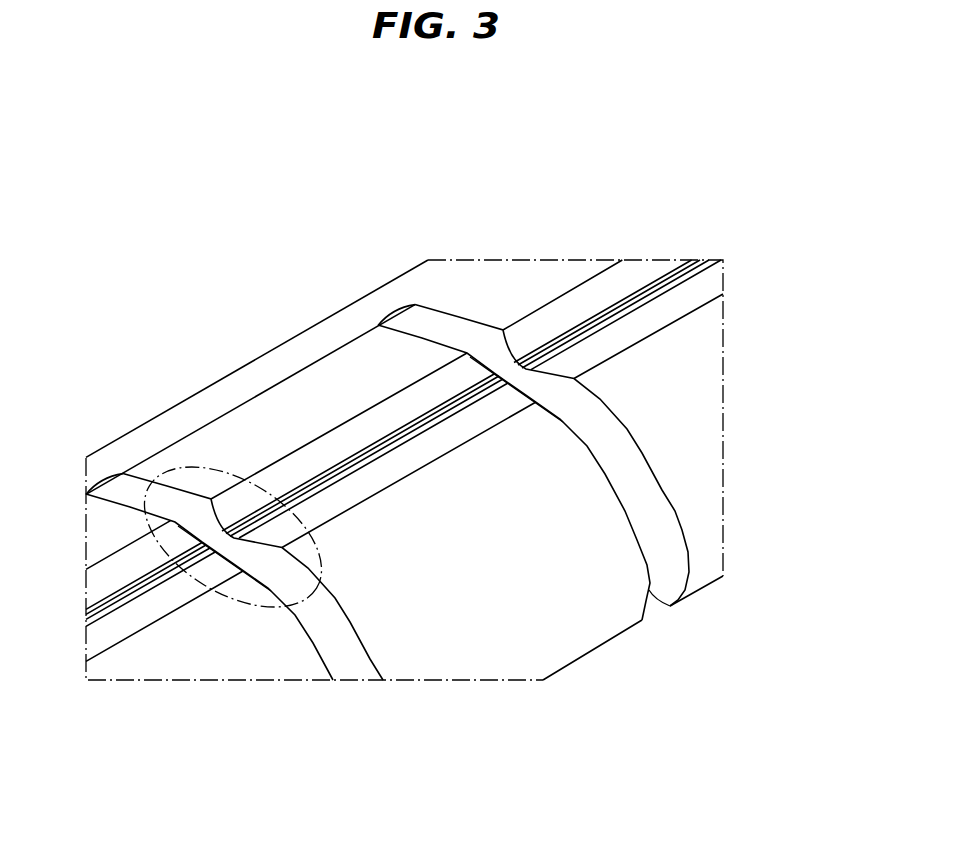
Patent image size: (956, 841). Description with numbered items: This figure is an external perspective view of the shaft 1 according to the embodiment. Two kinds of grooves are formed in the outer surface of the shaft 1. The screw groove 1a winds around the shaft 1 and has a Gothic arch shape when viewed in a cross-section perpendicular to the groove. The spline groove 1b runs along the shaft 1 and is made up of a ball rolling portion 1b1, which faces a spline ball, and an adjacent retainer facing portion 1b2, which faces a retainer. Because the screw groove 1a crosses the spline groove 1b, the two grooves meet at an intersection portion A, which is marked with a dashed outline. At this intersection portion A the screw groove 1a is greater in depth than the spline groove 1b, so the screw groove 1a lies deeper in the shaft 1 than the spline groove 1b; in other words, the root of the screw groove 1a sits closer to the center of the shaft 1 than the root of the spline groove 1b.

The shaft 1 is at (478, 250).
The screw groove 1a is at (333, 637).
The spline groove 1b is at (365, 219).
The ball rolling portion 1b1 is at (314, 455).
The retainer facing portion 1b2 is at (410, 462).
The intersection portion A is at (223, 593).